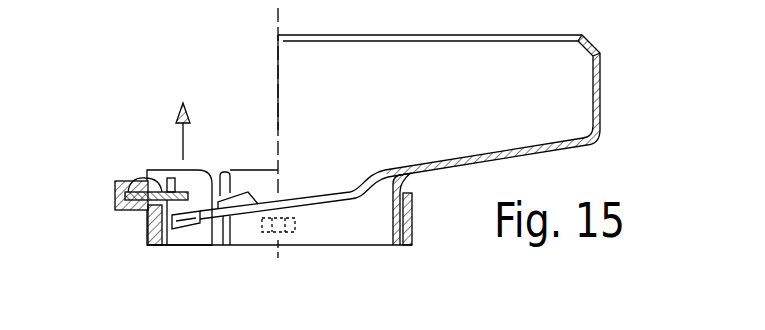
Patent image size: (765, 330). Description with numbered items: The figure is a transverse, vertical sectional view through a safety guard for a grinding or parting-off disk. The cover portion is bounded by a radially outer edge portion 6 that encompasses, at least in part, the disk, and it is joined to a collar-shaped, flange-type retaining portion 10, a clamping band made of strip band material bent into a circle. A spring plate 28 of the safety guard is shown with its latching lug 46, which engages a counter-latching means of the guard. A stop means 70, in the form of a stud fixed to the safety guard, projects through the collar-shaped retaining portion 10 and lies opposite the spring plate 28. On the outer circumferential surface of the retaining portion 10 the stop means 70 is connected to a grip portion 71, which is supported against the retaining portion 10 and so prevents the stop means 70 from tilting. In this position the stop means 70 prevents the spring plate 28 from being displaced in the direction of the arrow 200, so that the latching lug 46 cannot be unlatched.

The radially outer edge portion 6 is at (598, 92).
The collar-shaped retaining portion 10 is at (148, 227).
The spring plate 28 is at (350, 197).
The latching lug 46 is at (182, 231).
The stop means 70 is at (126, 178).
The grip portion 71 is at (115, 192).
The arrow 200 is at (184, 148).